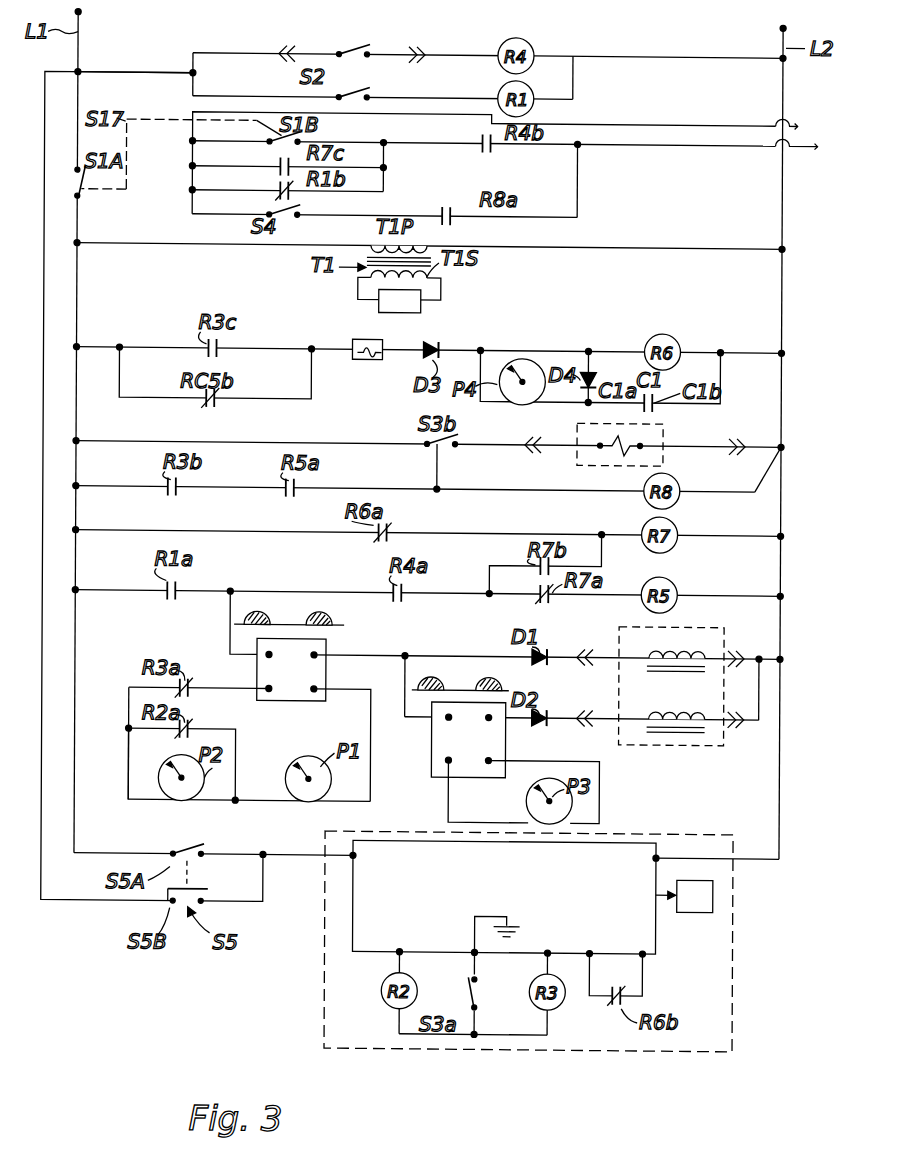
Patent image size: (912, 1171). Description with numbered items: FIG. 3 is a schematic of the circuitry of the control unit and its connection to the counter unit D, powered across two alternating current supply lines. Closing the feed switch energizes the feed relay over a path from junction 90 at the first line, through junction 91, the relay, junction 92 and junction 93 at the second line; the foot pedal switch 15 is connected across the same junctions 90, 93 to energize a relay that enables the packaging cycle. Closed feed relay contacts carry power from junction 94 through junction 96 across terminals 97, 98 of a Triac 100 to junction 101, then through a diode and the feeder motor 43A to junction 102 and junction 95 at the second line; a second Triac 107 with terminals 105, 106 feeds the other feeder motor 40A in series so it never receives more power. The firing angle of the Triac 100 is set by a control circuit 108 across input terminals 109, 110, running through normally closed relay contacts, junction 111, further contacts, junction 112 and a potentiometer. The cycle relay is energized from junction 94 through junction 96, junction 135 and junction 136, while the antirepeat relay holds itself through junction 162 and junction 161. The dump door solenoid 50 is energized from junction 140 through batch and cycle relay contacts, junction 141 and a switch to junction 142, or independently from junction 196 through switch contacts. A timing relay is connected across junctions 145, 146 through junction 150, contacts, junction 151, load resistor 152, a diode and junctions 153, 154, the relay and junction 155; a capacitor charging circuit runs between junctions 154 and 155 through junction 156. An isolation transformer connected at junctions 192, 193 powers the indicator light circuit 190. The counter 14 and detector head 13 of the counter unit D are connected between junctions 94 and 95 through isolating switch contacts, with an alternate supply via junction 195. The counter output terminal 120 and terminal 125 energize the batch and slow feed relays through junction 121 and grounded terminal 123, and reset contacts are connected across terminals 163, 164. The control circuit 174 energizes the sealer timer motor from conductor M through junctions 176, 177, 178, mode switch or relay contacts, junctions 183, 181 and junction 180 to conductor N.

The junction 90 is at (78, 77).
The junction 91 is at (193, 75).
The junction 92 is at (571, 57).
The junction 93 is at (780, 58).
The foot pedal switch 15 is at (352, 50).
The control circuit 174 is at (598, 198).
The junction 176 is at (189, 143).
The junction 177 is at (189, 168).
The junction 178 is at (189, 192).
The junction 181 is at (384, 141).
The junction 183 is at (384, 166).
The junction 180 is at (577, 147).
The junction 192 is at (77, 248).
The junction 193 is at (780, 248).
The indicator light circuit 190 is at (400, 301).
The junction 145 is at (78, 349).
The junction 150 is at (121, 349).
The junction 151 is at (311, 348).
The load resistor 152 is at (368, 362).
The junction 153 is at (480, 348).
The junction 154 is at (588, 348).
The junction 155 is at (720, 348).
The junction 146 is at (783, 350).
The junction 156 is at (592, 403).
The junction 196 is at (78, 443).
The junction 141 is at (439, 487).
The dump door actuating solenoid 50 is at (577, 457).
The junction 142 is at (783, 444).
The junction 140 is at (78, 488).
The junction 162 is at (602, 531).
The junction 161 is at (783, 533).
The junction 94 is at (78, 592).
The junction 96 is at (233, 591).
The junction 135 is at (490, 596).
The junction 136 is at (783, 593).
The power-controlling device (Triac) 100 is at (284, 705).
The terminal 97 is at (268, 658).
The terminal 98 is at (317, 658).
The input terminal 109 is at (269, 693).
The input terminal 110 is at (317, 693).
The junction 111 is at (128, 729).
The control circuit 108 is at (125, 764).
The junction 112 is at (238, 800).
The junction 101 is at (406, 654).
The Triac 107 is at (432, 772).
The terminal 105 is at (448, 719).
The terminal 106 is at (492, 719).
The feeder motor 43A is at (642, 670).
The feeder motor 40A is at (680, 731).
The junction 102 is at (770, 640).
The junction 95 is at (783, 656).
The junction 195 is at (266, 854).
The counter 14 is at (532, 895).
The detector head 13 is at (706, 904).
The counter unit D is at (478, 1056).
The counter terminal 125 is at (402, 950).
The junction 121 is at (479, 1033).
The grounded terminal 123 is at (472, 949).
The output terminal 120 is at (550, 950).
The terminal 163 is at (592, 950).
The terminal 164 is at (645, 950).